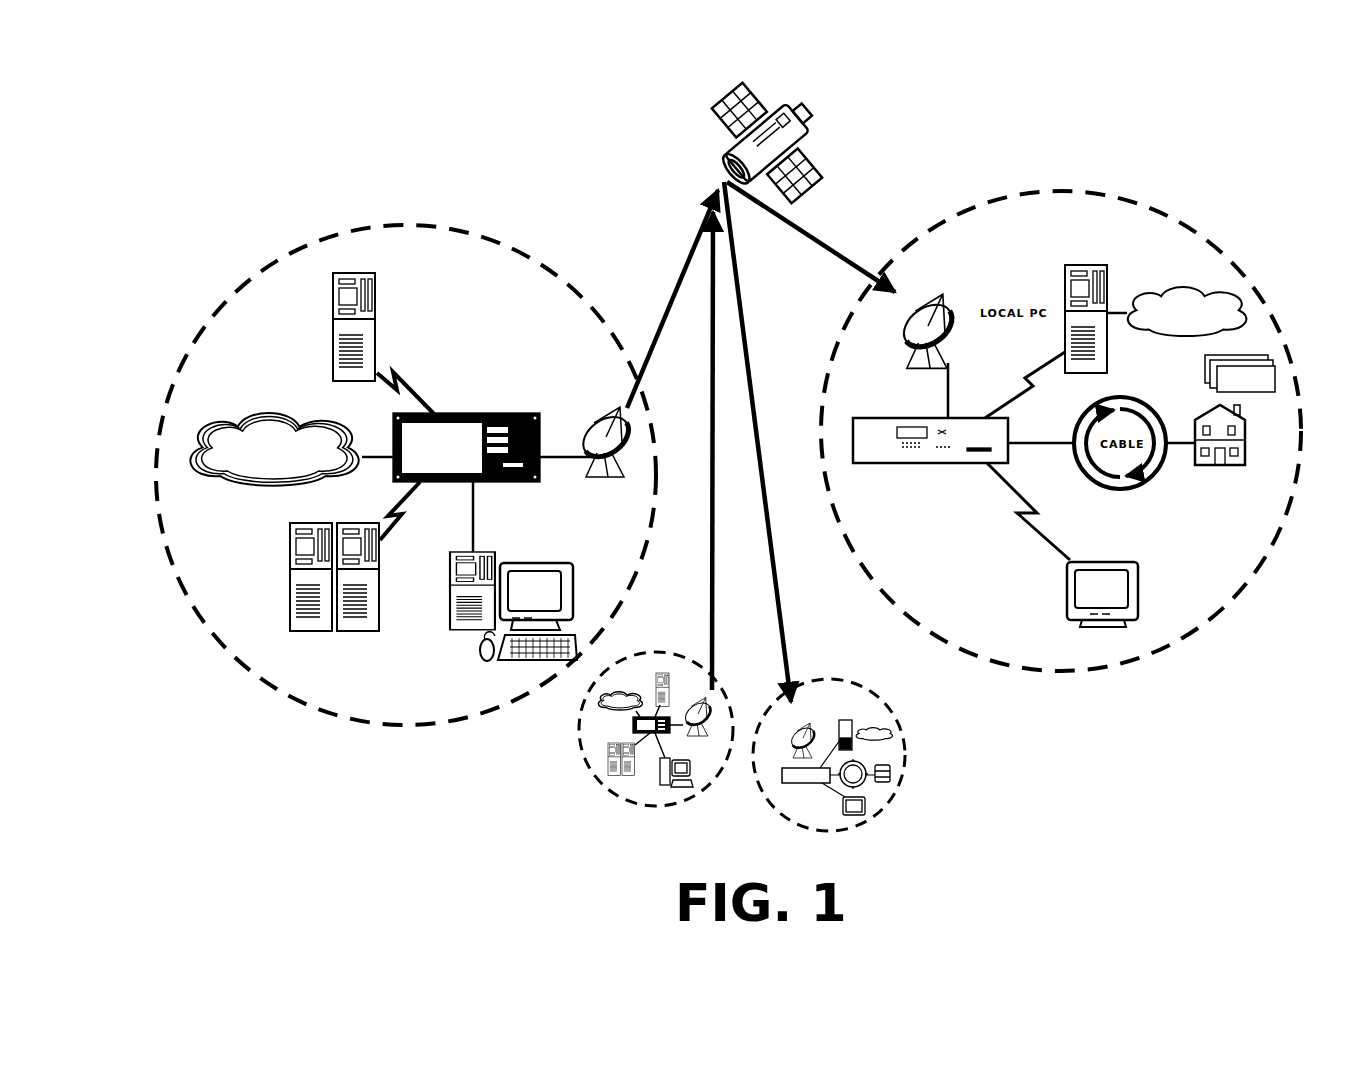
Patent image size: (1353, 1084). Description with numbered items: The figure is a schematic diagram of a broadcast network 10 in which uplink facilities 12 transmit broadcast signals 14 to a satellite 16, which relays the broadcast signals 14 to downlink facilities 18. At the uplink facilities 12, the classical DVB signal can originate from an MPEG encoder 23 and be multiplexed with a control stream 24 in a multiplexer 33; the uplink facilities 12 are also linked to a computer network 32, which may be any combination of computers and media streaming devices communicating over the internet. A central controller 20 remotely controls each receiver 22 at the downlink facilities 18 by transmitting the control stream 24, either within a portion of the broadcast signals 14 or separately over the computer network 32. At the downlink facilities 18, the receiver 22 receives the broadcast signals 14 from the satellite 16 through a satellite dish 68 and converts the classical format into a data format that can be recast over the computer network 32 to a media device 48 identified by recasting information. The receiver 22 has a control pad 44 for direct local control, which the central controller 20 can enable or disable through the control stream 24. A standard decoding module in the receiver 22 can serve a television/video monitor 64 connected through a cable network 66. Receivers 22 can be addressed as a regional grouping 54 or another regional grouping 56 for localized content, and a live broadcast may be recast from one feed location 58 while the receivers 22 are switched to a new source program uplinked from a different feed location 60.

The broadcast network 10 is at (283, 152).
The uplink facilities 12 is at (568, 735).
The broadcast signals 14 is at (640, 238).
The satellite 16 is at (813, 133).
The downlink facilities 18 is at (946, 664).
The central controller 20 is at (470, 527).
The receiver 22 is at (940, 457).
The MPEG encoder 23 is at (355, 272).
The control stream 24 is at (468, 637).
The computer network 32 is at (200, 420).
The multiplexer 33 is at (447, 413).
The control pad 44 is at (968, 463).
The media device 48 is at (1260, 357).
The regional grouping 54 is at (1062, 675).
The regional grouping 56 is at (907, 757).
The feed location 58 is at (470, 722).
The feed location 60 is at (600, 780).
The television/video monitor 64 is at (1143, 615).
The cable network 66 is at (1202, 477).
The satellite dish 68 is at (943, 297).